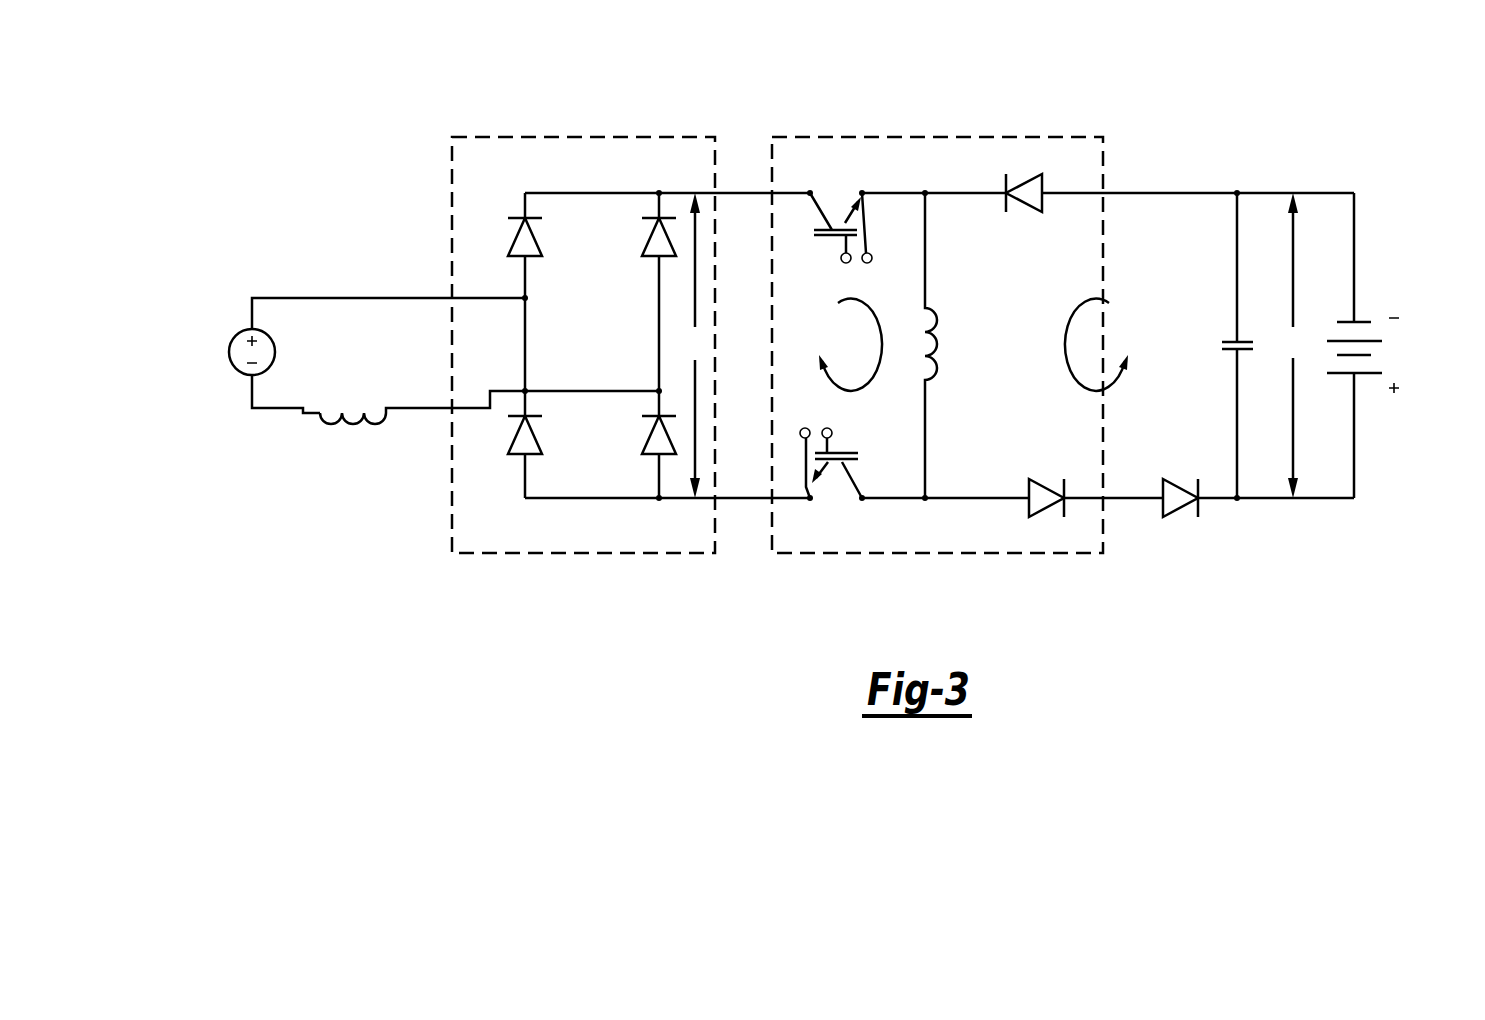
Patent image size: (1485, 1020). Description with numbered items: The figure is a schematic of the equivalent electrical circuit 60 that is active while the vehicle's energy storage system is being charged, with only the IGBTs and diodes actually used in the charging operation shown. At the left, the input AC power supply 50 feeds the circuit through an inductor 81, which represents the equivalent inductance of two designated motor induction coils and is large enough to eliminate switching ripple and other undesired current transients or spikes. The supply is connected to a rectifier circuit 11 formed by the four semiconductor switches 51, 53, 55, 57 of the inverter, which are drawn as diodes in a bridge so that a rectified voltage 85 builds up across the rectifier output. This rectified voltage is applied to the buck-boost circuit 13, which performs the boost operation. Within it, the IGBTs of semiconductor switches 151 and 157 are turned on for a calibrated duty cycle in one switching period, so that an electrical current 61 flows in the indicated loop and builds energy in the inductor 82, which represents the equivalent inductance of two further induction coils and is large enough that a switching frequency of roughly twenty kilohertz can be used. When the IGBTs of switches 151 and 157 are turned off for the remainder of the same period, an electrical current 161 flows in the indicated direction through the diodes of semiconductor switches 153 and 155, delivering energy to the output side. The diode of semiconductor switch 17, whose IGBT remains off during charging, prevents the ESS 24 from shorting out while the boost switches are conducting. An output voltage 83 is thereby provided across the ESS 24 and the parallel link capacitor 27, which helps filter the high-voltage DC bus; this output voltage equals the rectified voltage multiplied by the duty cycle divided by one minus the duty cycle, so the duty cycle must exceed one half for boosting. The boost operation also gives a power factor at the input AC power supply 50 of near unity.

The equivalent electrical circuit 60 is at (1064, 43).
The input AC power supply 50 is at (228, 352).
The inductor 81 is at (352, 422).
The rectifier circuit 11 is at (484, 553).
The semiconductor switch 51 is at (577, 247).
The semiconductor switch 53 is at (577, 447).
The semiconductor switch 55 is at (630, 247).
The semiconductor switch 57 is at (630, 447).
The rectified voltage 85 is at (695, 345).
The buck-boost circuit 13 is at (803, 553).
The semiconductor switch 151 is at (909, 245).
The semiconductor switch 157 is at (904, 482).
The electrical current 61 is at (881, 346).
The electrical current 161 is at (1065, 350).
The inductor 82 is at (938, 343).
The semiconductor switch 153 is at (1039, 245).
The semiconductor switch 155 is at (1047, 465).
The semiconductor switch 17 is at (1192, 465).
The link capacitor 27 is at (1248, 350).
The output voltage 83 is at (1292, 345).
The ESS 24 is at (1412, 362).